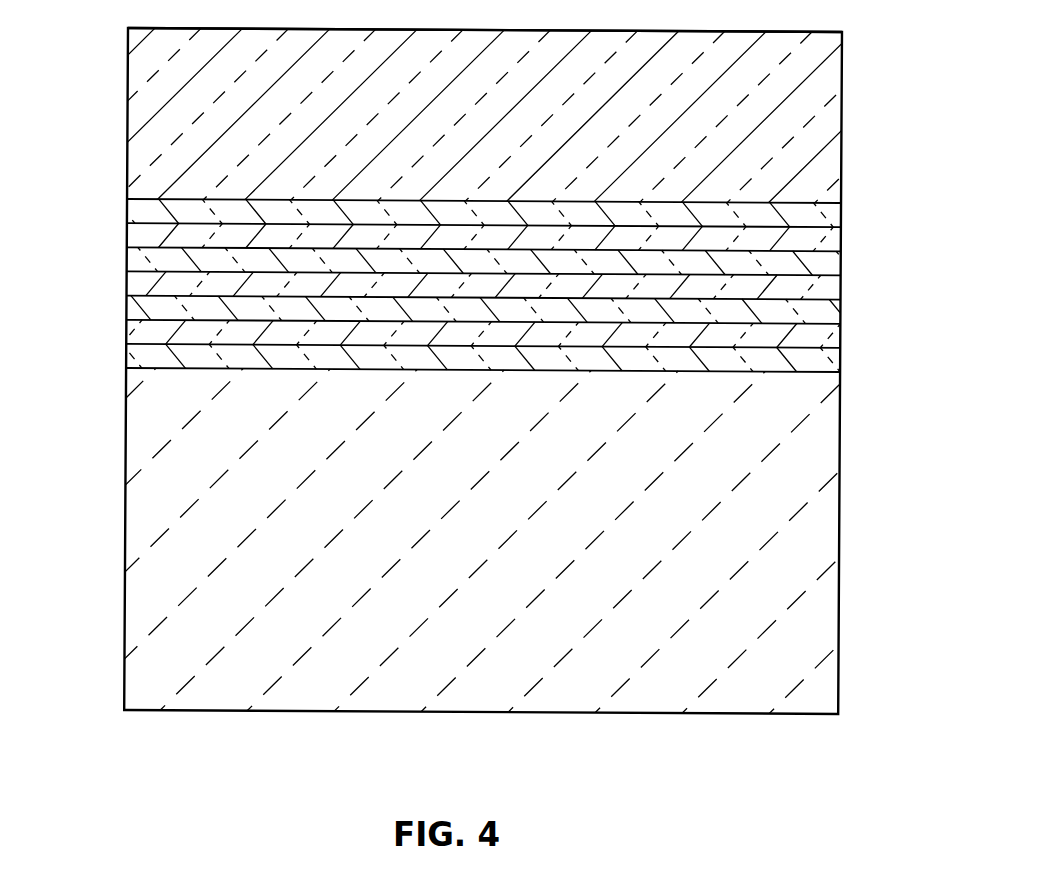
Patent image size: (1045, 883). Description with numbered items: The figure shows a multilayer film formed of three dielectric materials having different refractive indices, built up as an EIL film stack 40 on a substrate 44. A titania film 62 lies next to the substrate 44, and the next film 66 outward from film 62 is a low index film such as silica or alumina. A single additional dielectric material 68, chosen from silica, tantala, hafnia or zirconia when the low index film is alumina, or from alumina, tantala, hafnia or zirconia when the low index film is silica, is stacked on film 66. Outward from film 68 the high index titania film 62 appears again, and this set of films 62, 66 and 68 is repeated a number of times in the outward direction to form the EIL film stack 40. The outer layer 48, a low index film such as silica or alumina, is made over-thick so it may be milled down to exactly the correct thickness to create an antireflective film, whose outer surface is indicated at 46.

The EIL film stack 40 is at (842, 204).
The substrate 44 is at (778, 532).
The top surface 46 is at (713, 31).
The outer layer 48 is at (818, 140).
The titania film 62 is at (168, 213).
The low index film 66 is at (172, 258).
The additional dielectric material 68 is at (157, 240).